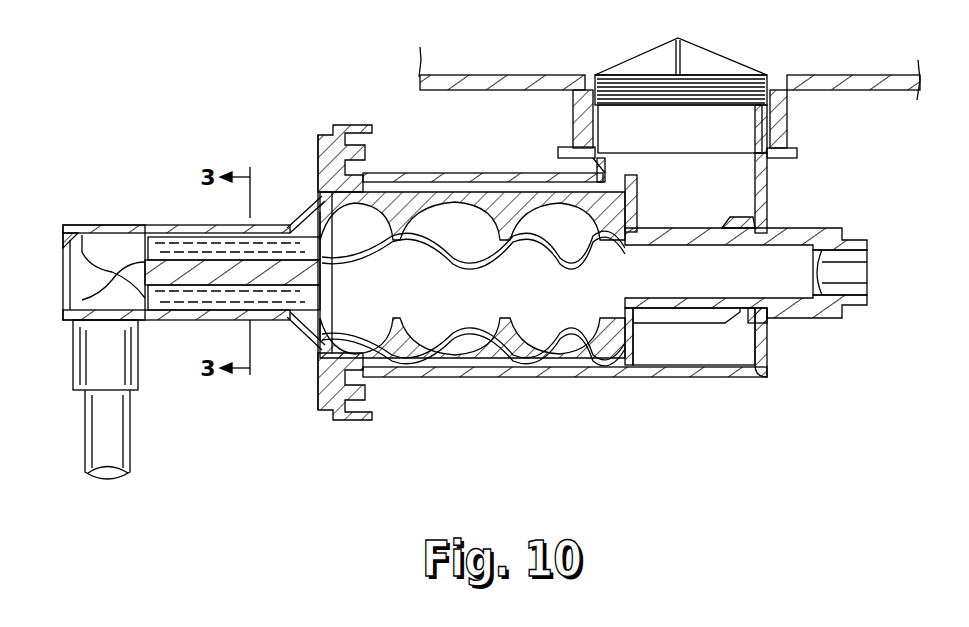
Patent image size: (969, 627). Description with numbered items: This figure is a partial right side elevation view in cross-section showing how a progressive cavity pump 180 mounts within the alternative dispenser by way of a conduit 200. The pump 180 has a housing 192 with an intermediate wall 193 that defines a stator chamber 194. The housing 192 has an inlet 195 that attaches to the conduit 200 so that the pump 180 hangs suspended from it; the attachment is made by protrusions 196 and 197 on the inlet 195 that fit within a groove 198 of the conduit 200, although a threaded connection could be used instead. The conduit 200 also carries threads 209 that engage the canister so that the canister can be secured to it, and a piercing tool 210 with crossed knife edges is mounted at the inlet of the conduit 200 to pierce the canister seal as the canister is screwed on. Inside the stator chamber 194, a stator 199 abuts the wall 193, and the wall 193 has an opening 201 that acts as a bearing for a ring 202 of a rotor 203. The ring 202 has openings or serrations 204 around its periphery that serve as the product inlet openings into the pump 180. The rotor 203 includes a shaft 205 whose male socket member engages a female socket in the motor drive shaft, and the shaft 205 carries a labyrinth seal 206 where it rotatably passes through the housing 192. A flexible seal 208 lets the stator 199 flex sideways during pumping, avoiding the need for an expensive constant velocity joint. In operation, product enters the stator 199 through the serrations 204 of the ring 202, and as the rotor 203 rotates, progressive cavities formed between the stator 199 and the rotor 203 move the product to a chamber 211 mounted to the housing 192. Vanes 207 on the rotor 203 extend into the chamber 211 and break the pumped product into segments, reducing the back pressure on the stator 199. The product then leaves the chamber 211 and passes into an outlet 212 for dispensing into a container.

The progressive cavity pump 180 is at (672, 413).
The housing 192 is at (476, 180).
The intermediate wall 193 is at (640, 195).
The stator chamber 194 is at (567, 363).
The inlet 195 is at (758, 115).
The protrusion 196 is at (590, 128).
The protrusion 197 is at (785, 128).
The groove 198 is at (572, 112).
The stator 199 is at (407, 198).
The conduit 200 is at (789, 115).
The opening 201 is at (575, 230).
The ring 202 is at (665, 230).
The rotor 203 is at (530, 350).
The serrations 204 is at (640, 350).
The shaft 205 is at (702, 283).
The labyrinth seal 206 is at (748, 325).
The vanes 207 is at (188, 320).
The flexible seal 208 is at (368, 380).
The threads 209 is at (775, 75).
The piercing tool 210 is at (640, 55).
The chamber 211 is at (97, 232).
The outlet 212 is at (72, 378).